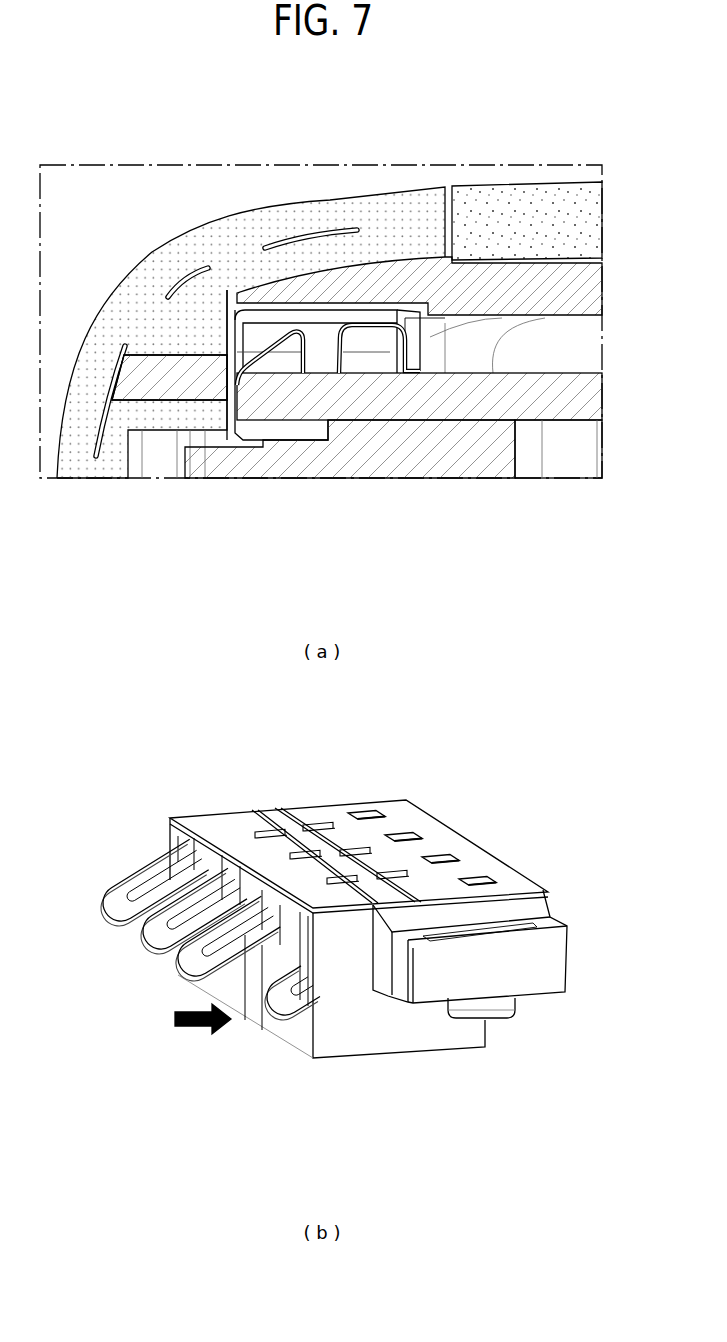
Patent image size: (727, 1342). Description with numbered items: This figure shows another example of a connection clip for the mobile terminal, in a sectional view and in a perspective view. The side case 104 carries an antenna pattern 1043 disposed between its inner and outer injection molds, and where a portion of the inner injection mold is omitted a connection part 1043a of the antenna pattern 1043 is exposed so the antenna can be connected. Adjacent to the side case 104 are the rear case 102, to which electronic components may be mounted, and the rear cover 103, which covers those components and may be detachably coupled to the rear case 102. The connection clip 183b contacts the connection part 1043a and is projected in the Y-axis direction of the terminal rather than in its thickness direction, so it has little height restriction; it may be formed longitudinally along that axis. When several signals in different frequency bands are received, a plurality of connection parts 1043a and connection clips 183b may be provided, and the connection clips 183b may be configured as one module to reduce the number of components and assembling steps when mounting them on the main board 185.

The side case 104 is at (152, 252).
The antenna pattern 1043 is at (303, 247).
The connection part 1043a is at (160, 377).
The rear case 102 is at (408, 280).
The rear cover 103 is at (537, 218).
The connection clip 183b is at (338, 367).
The main board 185 is at (527, 392).